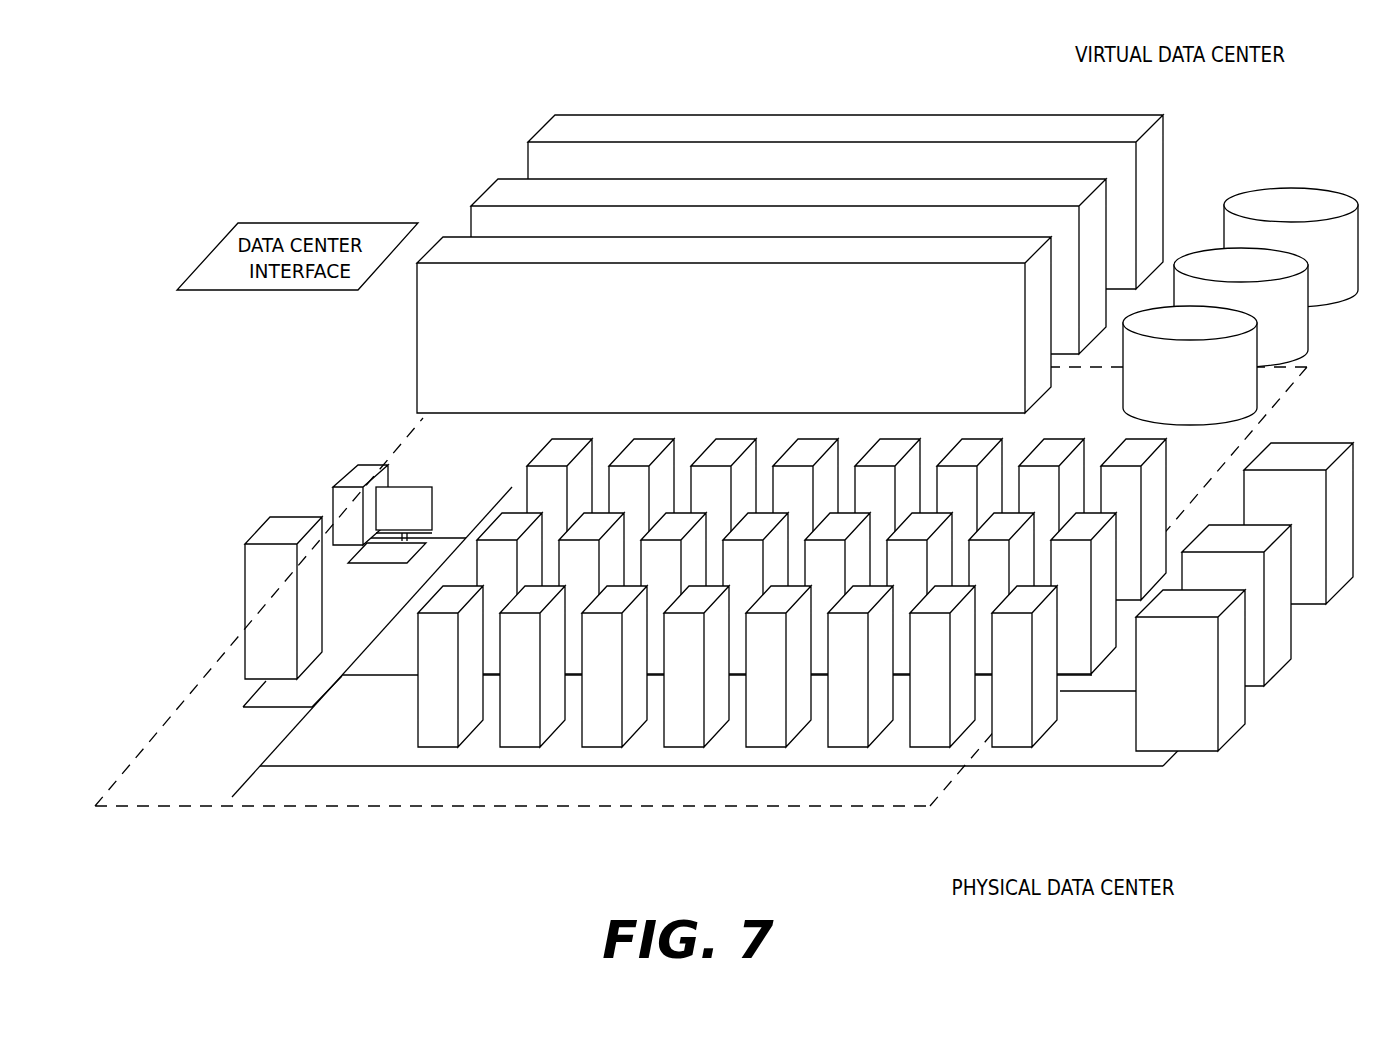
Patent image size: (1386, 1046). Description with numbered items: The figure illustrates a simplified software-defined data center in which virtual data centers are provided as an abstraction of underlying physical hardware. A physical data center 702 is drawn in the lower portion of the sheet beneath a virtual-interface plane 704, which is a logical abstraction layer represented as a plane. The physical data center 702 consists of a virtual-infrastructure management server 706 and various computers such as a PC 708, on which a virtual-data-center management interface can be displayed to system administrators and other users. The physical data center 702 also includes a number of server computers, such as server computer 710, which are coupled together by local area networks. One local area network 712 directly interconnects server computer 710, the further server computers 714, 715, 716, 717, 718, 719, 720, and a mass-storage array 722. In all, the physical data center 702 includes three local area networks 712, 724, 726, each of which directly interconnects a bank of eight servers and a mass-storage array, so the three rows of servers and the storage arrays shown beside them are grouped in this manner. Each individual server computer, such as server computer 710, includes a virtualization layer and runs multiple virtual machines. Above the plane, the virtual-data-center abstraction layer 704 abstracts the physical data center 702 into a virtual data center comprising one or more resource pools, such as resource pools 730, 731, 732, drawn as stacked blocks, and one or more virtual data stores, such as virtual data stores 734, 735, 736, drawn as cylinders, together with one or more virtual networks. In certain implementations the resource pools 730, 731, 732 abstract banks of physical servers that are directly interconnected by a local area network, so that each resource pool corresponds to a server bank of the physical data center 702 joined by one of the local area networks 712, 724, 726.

The physical data center 702 is at (1287, 750).
The virtual-interface plane 704 is at (258, 808).
The virtual-infrastructure management server 706 is at (283, 525).
The PC 708 is at (356, 478).
The server computer 710 is at (428, 702).
The local area network 712 is at (343, 768).
The server computer 714 is at (530, 738).
The server computer 715 is at (608, 738).
The server computer 716 is at (697, 738).
The server computer 717 is at (776, 738).
The server computer 718 is at (858, 738).
The server computer 719 is at (940, 738).
The server computer 720 is at (1022, 745).
The mass-storage array 722 is at (1197, 748).
The local area network 724 is at (378, 675).
The local area network 726 is at (440, 574).
The resource pool 730 is at (457, 247).
The resource pool 731 is at (515, 183).
The resource pool 732 is at (576, 118).
The virtual data store 734 is at (1248, 392).
The virtual data store 735 is at (1302, 320).
The virtual data store 736 is at (1295, 197).